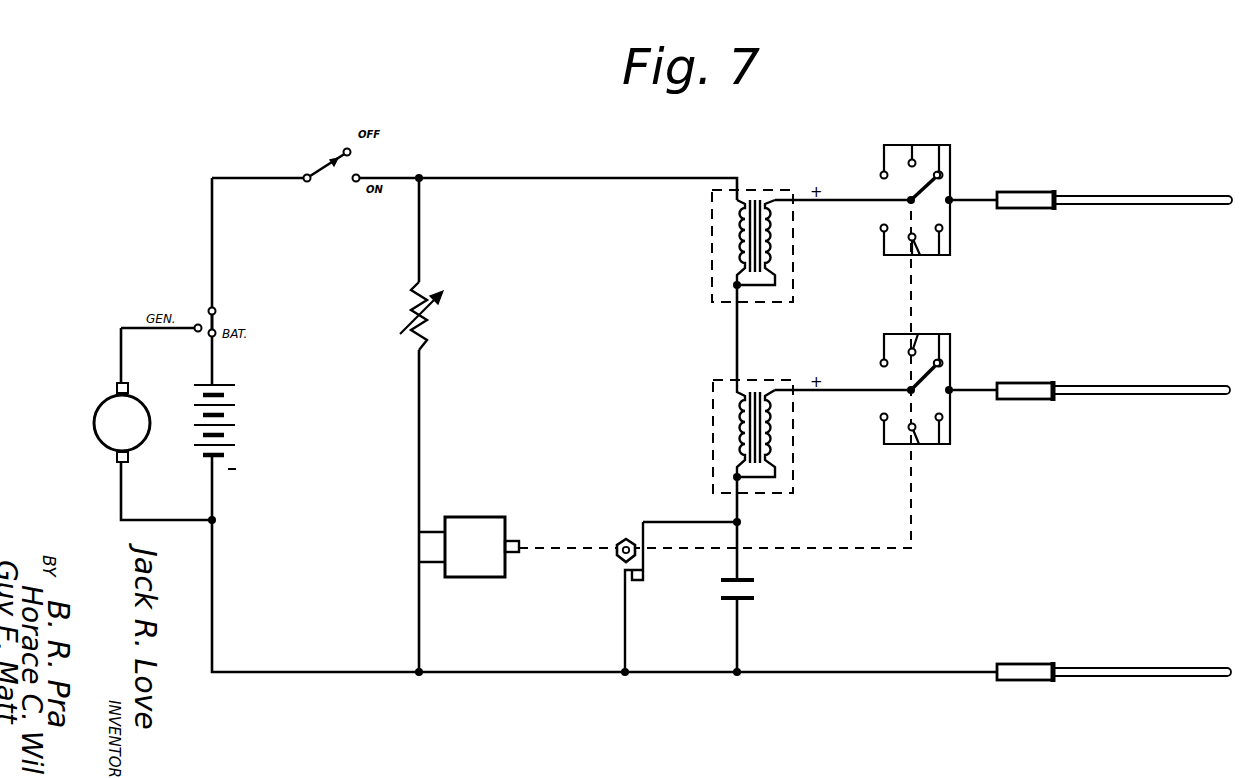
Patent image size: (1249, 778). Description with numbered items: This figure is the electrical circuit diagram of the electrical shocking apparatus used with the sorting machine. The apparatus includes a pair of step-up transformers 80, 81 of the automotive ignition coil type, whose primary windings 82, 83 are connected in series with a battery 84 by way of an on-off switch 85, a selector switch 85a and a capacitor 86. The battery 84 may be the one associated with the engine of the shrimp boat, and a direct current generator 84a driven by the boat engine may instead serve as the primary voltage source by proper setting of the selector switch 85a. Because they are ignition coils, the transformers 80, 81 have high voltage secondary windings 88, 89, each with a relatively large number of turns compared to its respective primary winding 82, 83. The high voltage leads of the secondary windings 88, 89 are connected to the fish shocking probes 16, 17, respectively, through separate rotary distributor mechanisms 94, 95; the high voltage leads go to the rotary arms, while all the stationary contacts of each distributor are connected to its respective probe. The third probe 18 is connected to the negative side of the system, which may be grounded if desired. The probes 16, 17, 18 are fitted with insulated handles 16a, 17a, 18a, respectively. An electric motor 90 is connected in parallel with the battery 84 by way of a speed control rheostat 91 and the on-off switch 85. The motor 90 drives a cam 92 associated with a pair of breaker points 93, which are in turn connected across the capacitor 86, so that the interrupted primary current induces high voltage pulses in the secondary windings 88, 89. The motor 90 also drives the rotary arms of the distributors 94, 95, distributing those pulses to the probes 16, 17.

The fish shocking probe 16 is at (1117, 208).
The insulated handle 16a is at (1022, 208).
The fish shocking probe 17 is at (1126, 398).
The insulated handle 17a is at (1027, 400).
The third probe 18 is at (1122, 678).
The insulated handle 18a is at (1024, 680).
The step-up transformer 80 is at (772, 187).
The step-up transformer 81 is at (794, 465).
The primary winding 82 is at (735, 250).
The primary winding 83 is at (735, 428).
The battery 84 is at (235, 412).
The direct current generator 84a is at (93, 428).
The on-off switch 85 is at (320, 162).
The selector switch 85a is at (218, 322).
The capacitor 86 is at (756, 591).
The high voltage secondary winding 88 is at (790, 238).
The high voltage secondary winding 89 is at (778, 434).
The electric motor 90 is at (478, 516).
The speed control rheostat 91 is at (425, 328).
The cam 92 is at (622, 538).
The breaker points 93 is at (632, 582).
The rotary distributor mechanism 94 is at (932, 130).
The rotary distributor mechanism 95 is at (957, 332).